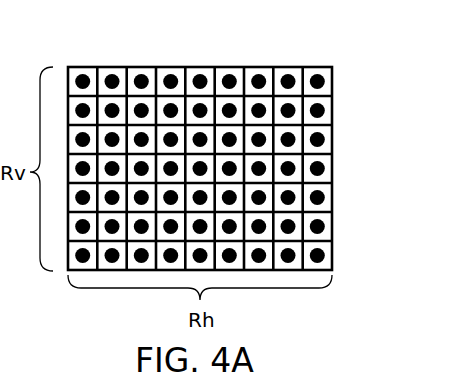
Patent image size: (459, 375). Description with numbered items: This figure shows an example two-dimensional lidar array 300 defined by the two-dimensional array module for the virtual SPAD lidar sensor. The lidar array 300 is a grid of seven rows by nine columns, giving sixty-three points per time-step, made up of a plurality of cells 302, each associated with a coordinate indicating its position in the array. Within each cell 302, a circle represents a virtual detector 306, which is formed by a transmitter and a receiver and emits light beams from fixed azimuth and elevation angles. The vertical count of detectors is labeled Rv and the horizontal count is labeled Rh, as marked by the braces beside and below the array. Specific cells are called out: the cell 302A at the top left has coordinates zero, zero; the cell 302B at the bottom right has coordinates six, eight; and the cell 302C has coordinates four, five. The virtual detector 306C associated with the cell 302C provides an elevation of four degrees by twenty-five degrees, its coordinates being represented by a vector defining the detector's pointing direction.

The 2D lidar array 300 is at (243, 148).
The cell 302 is at (207, 66).
The cell 302A is at (73, 68).
The cell 302B is at (326, 256).
The cell 302C is at (331, 134).
The virtual detector 306 is at (325, 197).
The virtual detector 306C is at (229, 198).